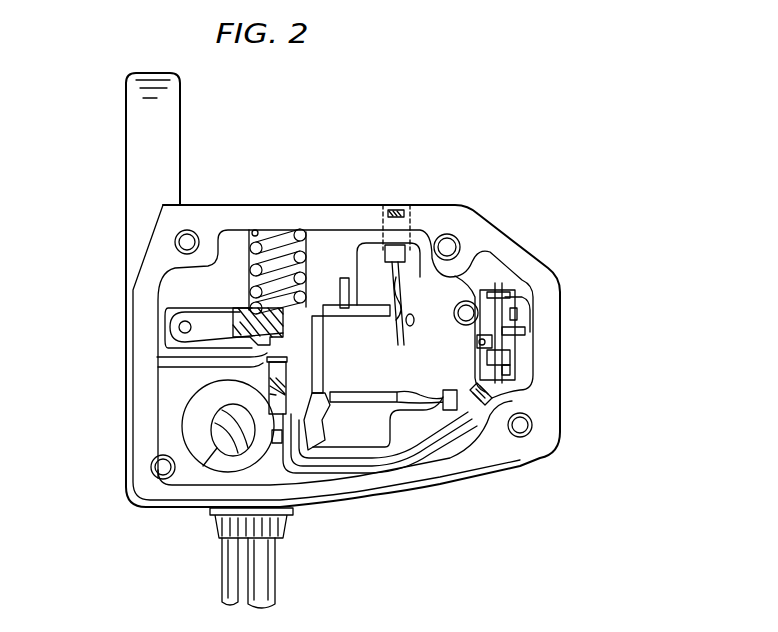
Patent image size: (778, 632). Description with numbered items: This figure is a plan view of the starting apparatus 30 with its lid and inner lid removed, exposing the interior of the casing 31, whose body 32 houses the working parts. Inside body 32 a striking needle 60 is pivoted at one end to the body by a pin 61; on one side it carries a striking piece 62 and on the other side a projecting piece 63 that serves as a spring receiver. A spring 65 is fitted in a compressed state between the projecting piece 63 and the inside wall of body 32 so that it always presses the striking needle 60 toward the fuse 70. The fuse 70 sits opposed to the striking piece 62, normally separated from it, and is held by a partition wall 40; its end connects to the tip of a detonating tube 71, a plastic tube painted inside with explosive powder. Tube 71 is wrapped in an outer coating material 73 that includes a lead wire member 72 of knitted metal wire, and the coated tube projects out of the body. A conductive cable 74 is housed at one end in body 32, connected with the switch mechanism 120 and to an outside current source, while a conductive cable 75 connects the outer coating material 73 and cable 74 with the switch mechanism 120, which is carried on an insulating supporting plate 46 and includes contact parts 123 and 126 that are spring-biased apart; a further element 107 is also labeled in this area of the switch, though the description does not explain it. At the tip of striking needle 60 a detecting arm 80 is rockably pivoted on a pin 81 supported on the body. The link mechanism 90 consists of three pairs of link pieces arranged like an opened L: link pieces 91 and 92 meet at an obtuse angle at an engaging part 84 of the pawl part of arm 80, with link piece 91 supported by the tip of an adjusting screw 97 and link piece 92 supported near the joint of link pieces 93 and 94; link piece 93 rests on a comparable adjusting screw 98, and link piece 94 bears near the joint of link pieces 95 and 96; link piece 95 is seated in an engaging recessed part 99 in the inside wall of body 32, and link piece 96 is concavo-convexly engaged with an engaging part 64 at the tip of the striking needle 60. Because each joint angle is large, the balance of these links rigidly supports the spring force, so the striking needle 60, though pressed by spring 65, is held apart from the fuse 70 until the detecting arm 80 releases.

The starting apparatus 30 is at (540, 436).
The casing 31 is at (538, 410).
The body 32 is at (440, 484).
The partition wall 40 is at (160, 365).
The insulating supporting plate 46 is at (500, 353).
The striking needle 60 is at (212, 323).
The pin 61 is at (179, 327).
The striking piece 62 is at (230, 358).
The projecting piece 63 is at (277, 310).
The engaging part 64 is at (312, 310).
The spring 65 is at (302, 236).
The fuse 70 is at (272, 366).
The detonating tube 71 is at (303, 425).
The lead wire member 72 is at (220, 462).
The outer coating material 73 is at (260, 590).
The conductive cable 74 is at (228, 588).
The conductive cable 75 is at (485, 403).
The arm 80 is at (338, 305).
The pin 81 is at (350, 337).
The engaging part 84 is at (402, 348).
The link mechanism 90 is at (400, 367).
The link piece 91 is at (398, 322).
The link piece 92 is at (418, 355).
The link piece 93 is at (428, 408).
The link piece 94 is at (378, 410).
The link piece 95 is at (340, 420).
The link piece 96 is at (332, 398).
The adjusting screw 97 is at (357, 238).
The adjusting screw 98 is at (458, 396).
The engaging recessed part 99 is at (318, 452).
The contact 107 is at (490, 314).
The switch mechanism 120 is at (530, 322).
The contact part 123 is at (527, 315).
The contact part 126 is at (525, 300).